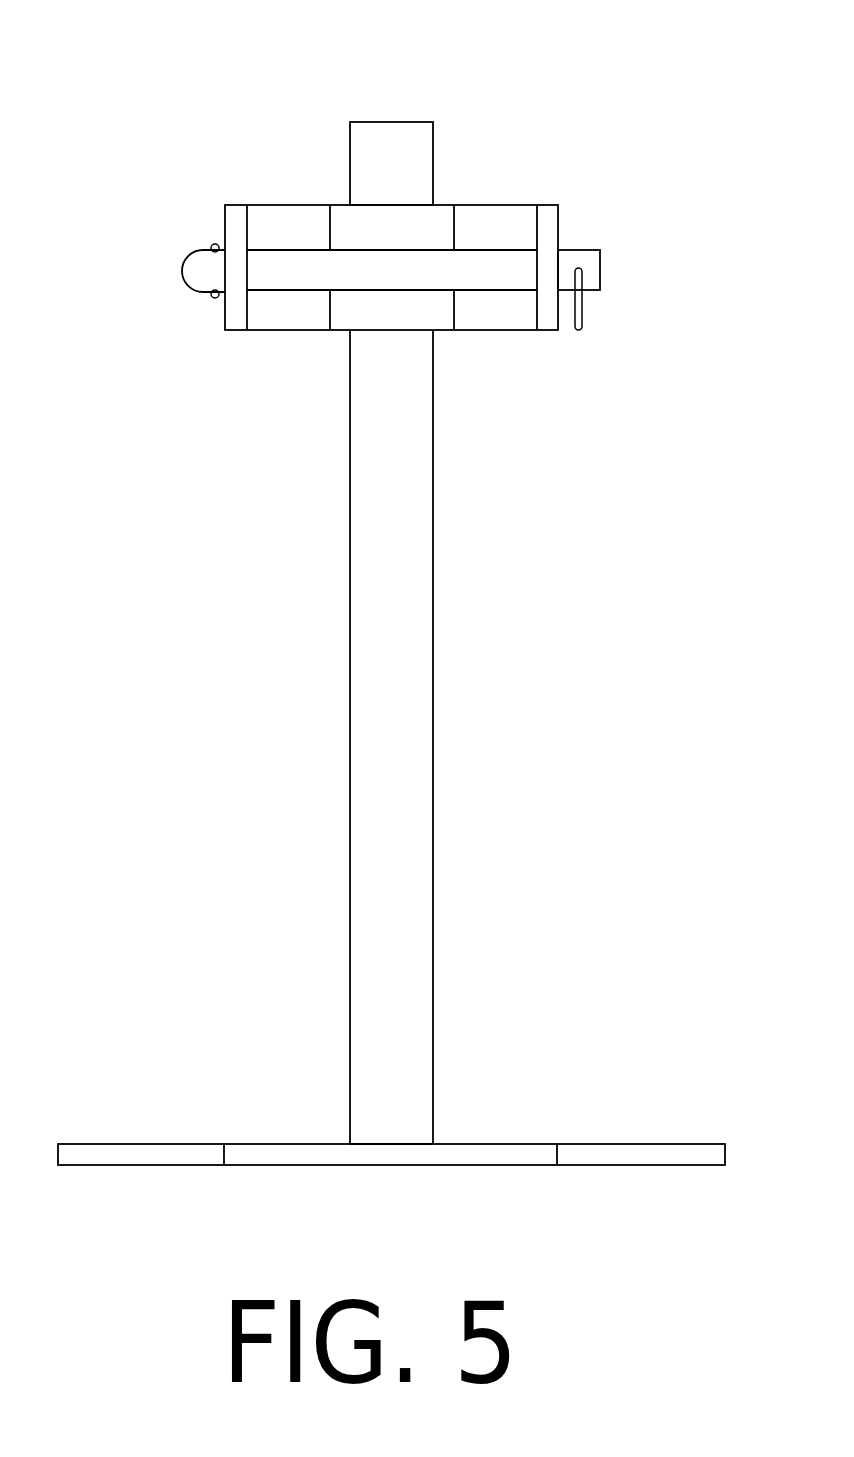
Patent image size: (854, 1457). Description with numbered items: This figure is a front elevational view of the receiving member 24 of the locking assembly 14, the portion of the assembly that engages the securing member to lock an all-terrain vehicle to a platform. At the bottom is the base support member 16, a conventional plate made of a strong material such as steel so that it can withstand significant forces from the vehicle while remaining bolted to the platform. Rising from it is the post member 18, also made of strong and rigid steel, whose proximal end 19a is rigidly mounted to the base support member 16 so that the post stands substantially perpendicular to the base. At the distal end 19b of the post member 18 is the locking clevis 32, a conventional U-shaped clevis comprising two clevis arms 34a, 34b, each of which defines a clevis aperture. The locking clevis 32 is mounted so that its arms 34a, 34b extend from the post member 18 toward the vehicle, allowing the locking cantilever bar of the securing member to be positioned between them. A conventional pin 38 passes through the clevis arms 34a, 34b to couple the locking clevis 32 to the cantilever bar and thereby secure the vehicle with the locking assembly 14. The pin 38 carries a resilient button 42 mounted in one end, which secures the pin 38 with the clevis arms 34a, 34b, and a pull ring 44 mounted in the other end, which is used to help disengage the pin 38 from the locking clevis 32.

The locking assembly 14 is at (391, 587).
The base support member 16 is at (213, 1152).
The post member 18 is at (412, 745).
The proximal end 19a is at (437, 1140).
The distal end 19b is at (438, 112).
The receiving member 24 is at (389, 240).
The locking clevis 32 is at (295, 227).
The clevis arm 34a is at (548, 213).
The clevis arm 34b is at (236, 215).
The pin 38 is at (358, 279).
The resilient button 42 is at (215, 247).
The pull ring 44 is at (578, 330).